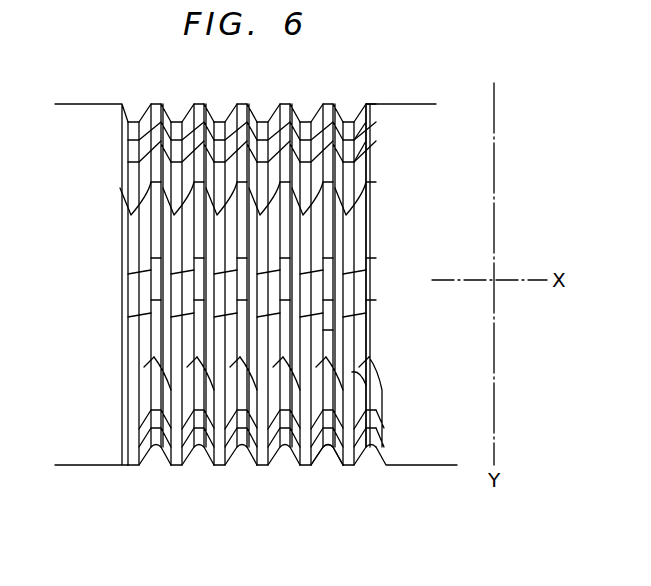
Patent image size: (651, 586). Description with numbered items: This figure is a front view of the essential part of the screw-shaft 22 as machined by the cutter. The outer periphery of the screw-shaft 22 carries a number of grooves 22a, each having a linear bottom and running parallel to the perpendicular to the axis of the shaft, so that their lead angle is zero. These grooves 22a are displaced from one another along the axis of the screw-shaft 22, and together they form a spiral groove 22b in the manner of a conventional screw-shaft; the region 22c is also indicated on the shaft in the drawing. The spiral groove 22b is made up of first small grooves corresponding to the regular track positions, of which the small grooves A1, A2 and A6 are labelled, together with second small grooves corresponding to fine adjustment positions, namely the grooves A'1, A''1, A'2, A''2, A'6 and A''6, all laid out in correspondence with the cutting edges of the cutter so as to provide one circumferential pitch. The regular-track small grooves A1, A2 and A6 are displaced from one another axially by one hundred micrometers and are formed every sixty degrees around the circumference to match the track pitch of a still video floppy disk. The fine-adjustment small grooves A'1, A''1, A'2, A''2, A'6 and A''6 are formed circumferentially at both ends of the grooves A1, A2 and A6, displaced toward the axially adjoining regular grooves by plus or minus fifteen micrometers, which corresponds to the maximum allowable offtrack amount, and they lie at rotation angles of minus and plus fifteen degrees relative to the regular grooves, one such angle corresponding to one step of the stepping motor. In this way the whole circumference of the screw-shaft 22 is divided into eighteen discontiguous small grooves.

The screw-shaft 22 is at (407, 103).
The groove 22a is at (325, 455).
The spiral groove 22b is at (323, 333).
The transition region of plate 22c is at (358, 372).
The second small groove A''2 is at (122, 136).
The first small groove A2 is at (177, 148).
The second small groove A'2 is at (122, 204).
The second small groove A''1 is at (123, 253).
The first small groove A1 is at (183, 285).
The second small groove A'1 is at (123, 327).
The second small groove A''6 is at (108, 367).
The first small groove A6 is at (148, 420).
The second small groove A'6 is at (108, 436).